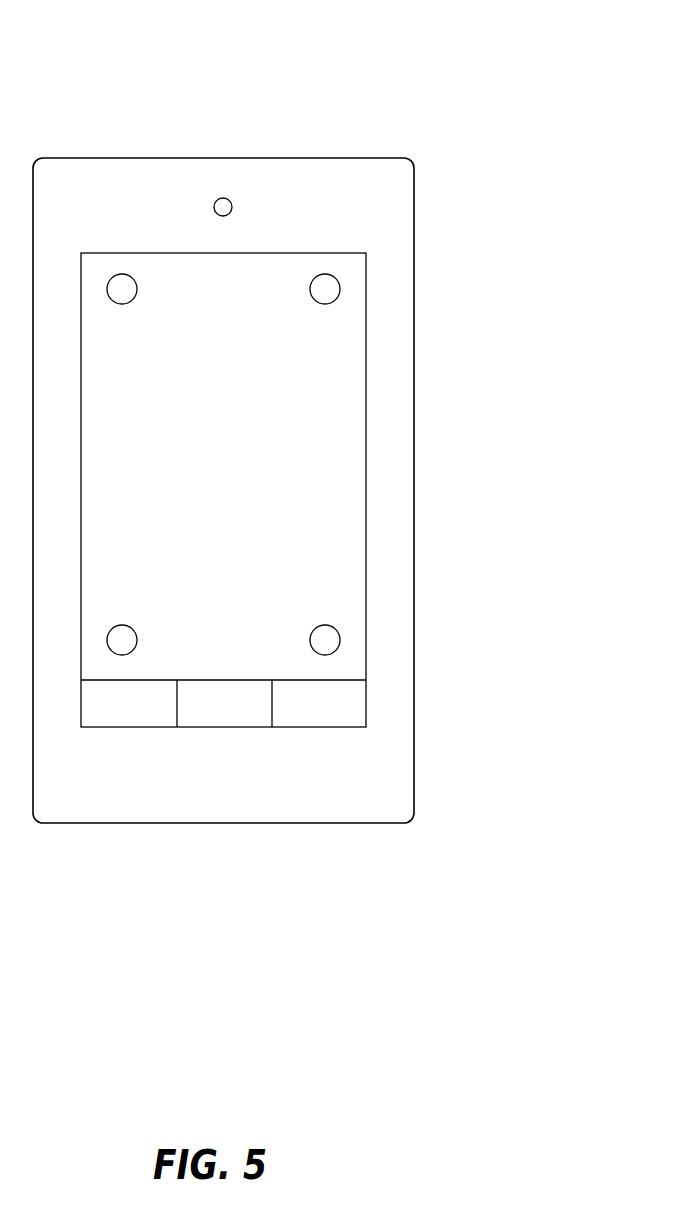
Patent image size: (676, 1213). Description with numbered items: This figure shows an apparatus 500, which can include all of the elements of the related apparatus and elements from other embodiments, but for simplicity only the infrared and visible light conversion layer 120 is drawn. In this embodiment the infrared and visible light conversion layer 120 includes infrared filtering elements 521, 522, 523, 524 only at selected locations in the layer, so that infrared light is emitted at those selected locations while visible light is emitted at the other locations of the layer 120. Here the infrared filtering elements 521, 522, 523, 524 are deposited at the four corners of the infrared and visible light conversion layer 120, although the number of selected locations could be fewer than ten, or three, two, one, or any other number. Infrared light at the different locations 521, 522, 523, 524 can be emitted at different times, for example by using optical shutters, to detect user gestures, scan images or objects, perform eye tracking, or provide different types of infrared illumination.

The apparatus 500 is at (580, 70).
The infrared and visible light conversion layer 120 is at (124, 254).
The infrared filtering element 521 is at (120, 304).
The infrared filtering element 522 is at (323, 304).
The infrared filtering element 523 is at (118, 626).
The infrared filtering element 524 is at (321, 626).